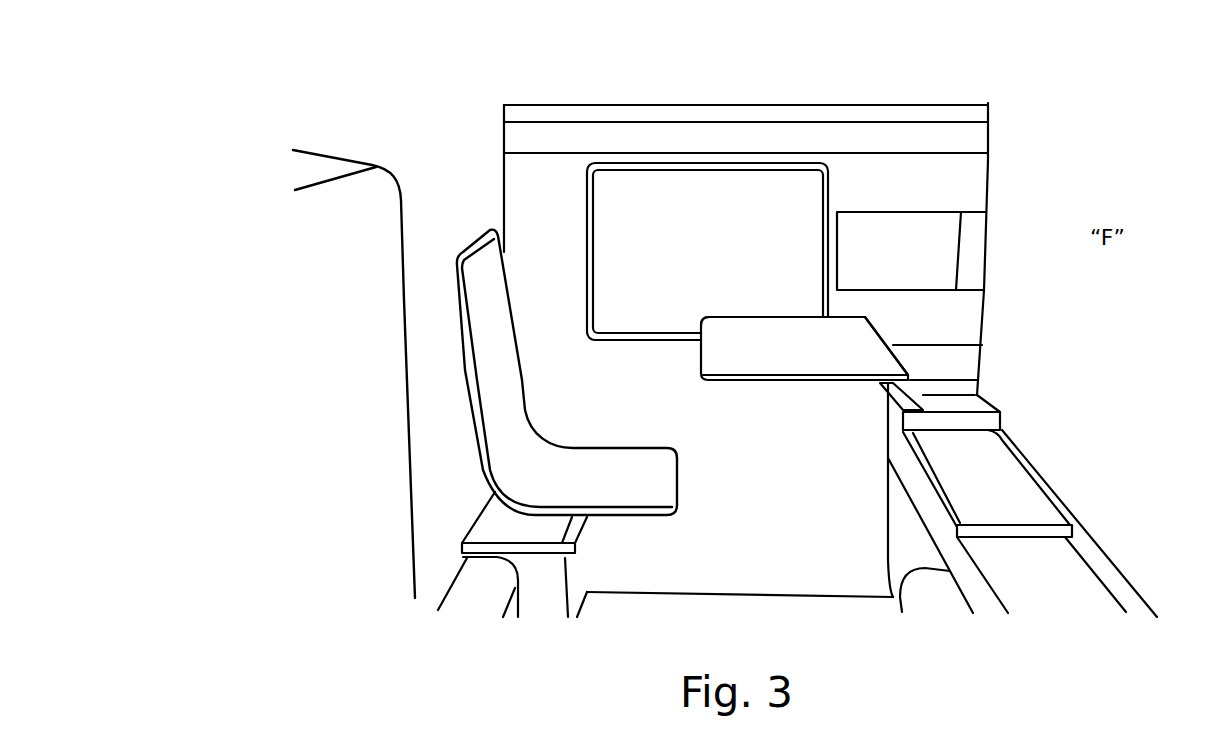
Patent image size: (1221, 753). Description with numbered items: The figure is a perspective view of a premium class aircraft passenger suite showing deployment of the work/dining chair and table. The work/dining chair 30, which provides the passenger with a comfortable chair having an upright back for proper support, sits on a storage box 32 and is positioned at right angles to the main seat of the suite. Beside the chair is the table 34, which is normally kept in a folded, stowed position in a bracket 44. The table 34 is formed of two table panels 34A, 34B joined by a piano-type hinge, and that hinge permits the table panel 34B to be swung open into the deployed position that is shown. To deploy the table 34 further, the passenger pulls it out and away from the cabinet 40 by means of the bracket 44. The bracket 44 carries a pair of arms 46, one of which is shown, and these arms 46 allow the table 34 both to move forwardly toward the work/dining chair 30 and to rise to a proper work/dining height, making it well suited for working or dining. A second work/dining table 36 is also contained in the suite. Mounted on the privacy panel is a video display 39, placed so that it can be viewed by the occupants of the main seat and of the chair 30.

The work/dining chair 30 is at (490, 350).
The storage box 32 is at (493, 527).
The table 34 is at (892, 293).
The table panel 34A is at (830, 337).
The table panel 34B is at (733, 332).
The work/dining table 36 is at (1055, 465).
The video display 39 is at (748, 233).
The cabinet 40 is at (1098, 560).
The bracket 44 is at (992, 418).
The arms 46 is at (903, 402).